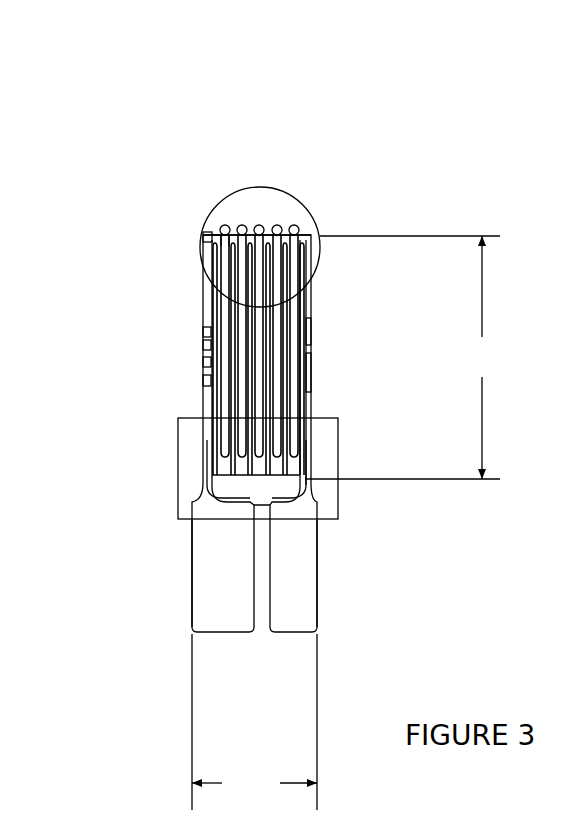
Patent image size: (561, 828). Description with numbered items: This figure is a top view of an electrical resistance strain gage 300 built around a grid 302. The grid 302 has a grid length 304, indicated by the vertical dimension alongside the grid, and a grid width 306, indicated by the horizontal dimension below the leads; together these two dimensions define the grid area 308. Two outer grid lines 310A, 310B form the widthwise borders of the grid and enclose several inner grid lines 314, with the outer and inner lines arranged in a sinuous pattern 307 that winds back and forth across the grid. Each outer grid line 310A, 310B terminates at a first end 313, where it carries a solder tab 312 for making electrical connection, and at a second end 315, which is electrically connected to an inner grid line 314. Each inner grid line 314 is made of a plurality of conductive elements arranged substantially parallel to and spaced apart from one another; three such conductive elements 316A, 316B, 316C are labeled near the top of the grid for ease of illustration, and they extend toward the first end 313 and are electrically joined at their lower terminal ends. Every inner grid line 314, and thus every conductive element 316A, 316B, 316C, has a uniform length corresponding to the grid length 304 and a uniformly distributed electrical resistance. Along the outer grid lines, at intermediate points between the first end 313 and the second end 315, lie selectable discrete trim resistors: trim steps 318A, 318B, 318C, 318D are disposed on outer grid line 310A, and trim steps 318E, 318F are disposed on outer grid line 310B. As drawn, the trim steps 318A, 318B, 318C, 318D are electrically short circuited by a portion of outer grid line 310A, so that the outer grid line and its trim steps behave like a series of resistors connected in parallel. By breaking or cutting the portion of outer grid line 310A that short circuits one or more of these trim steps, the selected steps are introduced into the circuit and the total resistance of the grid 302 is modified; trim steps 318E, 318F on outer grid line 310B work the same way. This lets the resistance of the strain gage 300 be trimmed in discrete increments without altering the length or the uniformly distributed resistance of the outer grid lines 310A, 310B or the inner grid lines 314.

The electrical resistance strain gage 300 is at (275, 322).
The grid 302 is at (322, 214).
The grid length 304 is at (402, 357).
The grid width 306 is at (254, 722).
The sinuous pattern 307 is at (205, 365).
The grid area 308 is at (186, 433).
The outer grid line 310A is at (153, 473).
The outer grid line 310B is at (351, 491).
The solder tab 312 is at (251, 576).
The first end 313 is at (234, 497).
The inner grid line 314 is at (135, 196).
The second end 315 is at (244, 210).
The conductive element 316A is at (260, 145).
The conductive element 316B is at (270, 163).
The conductive element 316C is at (274, 176).
The trim step 318A is at (139, 346).
The trim step 318B is at (129, 367).
The trim step 318C is at (125, 389).
The trim step 318D is at (122, 414).
The trim step 318E is at (371, 312).
The trim step 318F is at (368, 361).